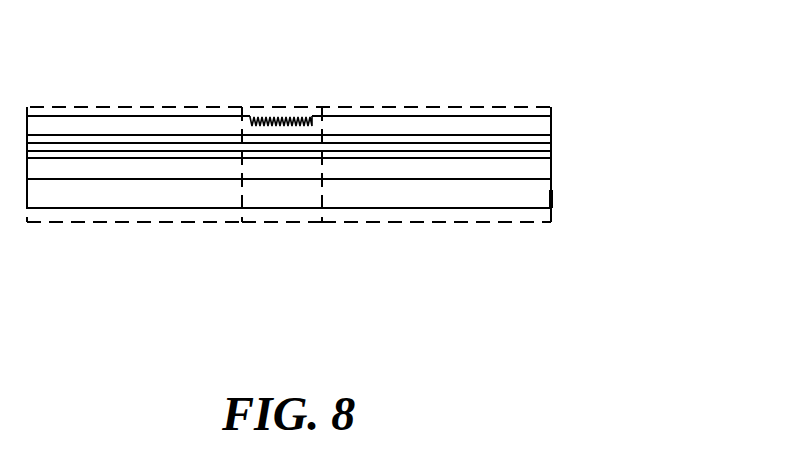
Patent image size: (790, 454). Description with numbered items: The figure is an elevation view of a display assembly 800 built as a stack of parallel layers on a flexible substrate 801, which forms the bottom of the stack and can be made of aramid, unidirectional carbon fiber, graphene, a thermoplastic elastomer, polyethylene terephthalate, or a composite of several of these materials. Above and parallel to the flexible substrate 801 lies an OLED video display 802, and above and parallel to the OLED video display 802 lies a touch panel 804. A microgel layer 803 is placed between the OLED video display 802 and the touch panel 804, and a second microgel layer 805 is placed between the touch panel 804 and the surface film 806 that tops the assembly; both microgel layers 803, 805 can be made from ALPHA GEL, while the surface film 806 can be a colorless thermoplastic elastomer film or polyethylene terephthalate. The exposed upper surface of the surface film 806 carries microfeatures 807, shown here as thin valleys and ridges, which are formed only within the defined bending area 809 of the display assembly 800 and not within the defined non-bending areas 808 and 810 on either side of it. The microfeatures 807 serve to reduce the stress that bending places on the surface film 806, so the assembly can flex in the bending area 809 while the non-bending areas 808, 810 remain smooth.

The display assembly 800 is at (154, 51).
The flexible substrate 801 is at (552, 200).
The OLED video display 802 is at (552, 168).
The microgel layer 803 is at (552, 155).
The touch panel 804 is at (552, 147).
The microgel layer 805 is at (552, 140).
The surface film 806 is at (552, 122).
The microfeatures 807 is at (283, 115).
The non-bending area 808 is at (123, 223).
The bending area 809 is at (298, 223).
The non-bending area 810 is at (447, 223).